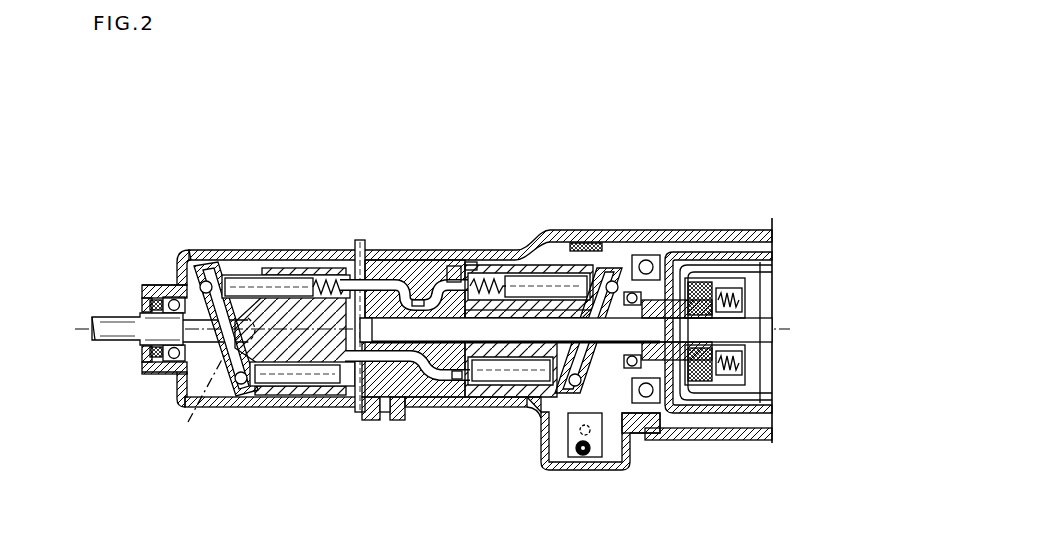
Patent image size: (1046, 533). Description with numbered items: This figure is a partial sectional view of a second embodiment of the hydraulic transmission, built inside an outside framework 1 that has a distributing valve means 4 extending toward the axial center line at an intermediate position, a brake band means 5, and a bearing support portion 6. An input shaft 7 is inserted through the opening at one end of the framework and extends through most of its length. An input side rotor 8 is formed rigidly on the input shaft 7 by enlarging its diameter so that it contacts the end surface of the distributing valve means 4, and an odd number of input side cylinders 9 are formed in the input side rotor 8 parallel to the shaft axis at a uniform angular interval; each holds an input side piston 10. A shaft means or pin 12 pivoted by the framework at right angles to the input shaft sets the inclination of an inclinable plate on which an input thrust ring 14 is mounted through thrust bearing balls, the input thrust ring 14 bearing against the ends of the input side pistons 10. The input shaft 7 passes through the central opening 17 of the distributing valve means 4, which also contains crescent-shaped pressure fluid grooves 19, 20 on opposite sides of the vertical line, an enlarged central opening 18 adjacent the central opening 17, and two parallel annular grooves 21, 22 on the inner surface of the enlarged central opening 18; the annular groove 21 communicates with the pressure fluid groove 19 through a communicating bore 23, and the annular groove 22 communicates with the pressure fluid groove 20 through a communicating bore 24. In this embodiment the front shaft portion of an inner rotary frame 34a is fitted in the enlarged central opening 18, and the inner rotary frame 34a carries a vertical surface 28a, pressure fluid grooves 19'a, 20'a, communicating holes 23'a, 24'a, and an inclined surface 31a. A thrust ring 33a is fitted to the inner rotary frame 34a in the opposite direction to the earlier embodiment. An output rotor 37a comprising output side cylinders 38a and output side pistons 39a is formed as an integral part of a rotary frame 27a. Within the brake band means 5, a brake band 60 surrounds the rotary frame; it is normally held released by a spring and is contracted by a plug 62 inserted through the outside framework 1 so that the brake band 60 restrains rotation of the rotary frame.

The outside framework 1 is at (697, 232).
The distributing valve means 4 is at (385, 425).
The brake band means 5 is at (613, 458).
The bearing support portion 6 is at (650, 408).
The input shaft 7 is at (134, 346).
The input side rotor 8 is at (283, 272).
The input side cylinders 9 is at (320, 282).
The input side piston 10 is at (245, 280).
The shaft means or pin 12 is at (196, 398).
The input thrust ring 14 is at (221, 266).
The central opening 17 is at (340, 355).
The enlarged central opening 18 is at (410, 263).
The pressure fluid groove 19 is at (348, 302).
The pressure fluid groove 19'a is at (487, 211).
The pressure fluid groove 20 is at (392, 410).
The pressure fluid groove 20'a is at (474, 412).
The annular groove 21 is at (398, 415).
The annular groove 22 is at (393, 280).
The communicating bore 23 is at (404, 254).
The communicating hole 23'a is at (439, 254).
The communicating bore 24 is at (367, 427).
The communicating hole 24'a is at (413, 399).
The rotary frame 27a is at (630, 262).
The vertical surface 28a is at (444, 265).
The inclined surface 31a is at (637, 425).
The thrust ring 33a is at (560, 402).
The inner rotary frame 34a is at (573, 335).
The output rotor 37a is at (522, 300).
The output side cylinders 38a is at (492, 275).
The output side pistons 39a is at (536, 298).
The brake band 60 is at (567, 410).
The plug 62 is at (600, 458).